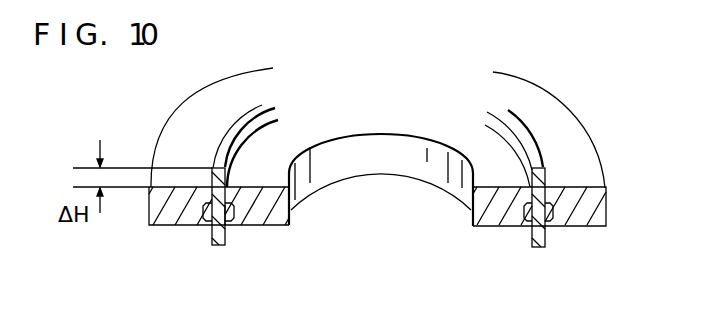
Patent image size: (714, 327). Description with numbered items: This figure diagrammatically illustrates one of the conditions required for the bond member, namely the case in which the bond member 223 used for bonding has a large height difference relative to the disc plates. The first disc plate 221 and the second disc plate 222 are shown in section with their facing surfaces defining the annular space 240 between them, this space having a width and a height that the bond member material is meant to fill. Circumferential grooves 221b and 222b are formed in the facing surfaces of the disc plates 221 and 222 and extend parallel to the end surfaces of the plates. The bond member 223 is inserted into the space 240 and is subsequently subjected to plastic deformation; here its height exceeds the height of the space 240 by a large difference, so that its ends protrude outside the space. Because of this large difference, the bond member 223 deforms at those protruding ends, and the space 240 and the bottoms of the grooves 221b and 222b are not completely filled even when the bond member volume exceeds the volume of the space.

The first disc plate 221 is at (158, 228).
The circumferential groove 221b is at (203, 211).
The second disc plate 222 is at (288, 226).
The circumferential groove 222b is at (233, 206).
The bond member 223 is at (213, 245).
The annular space 240 is at (225, 210).